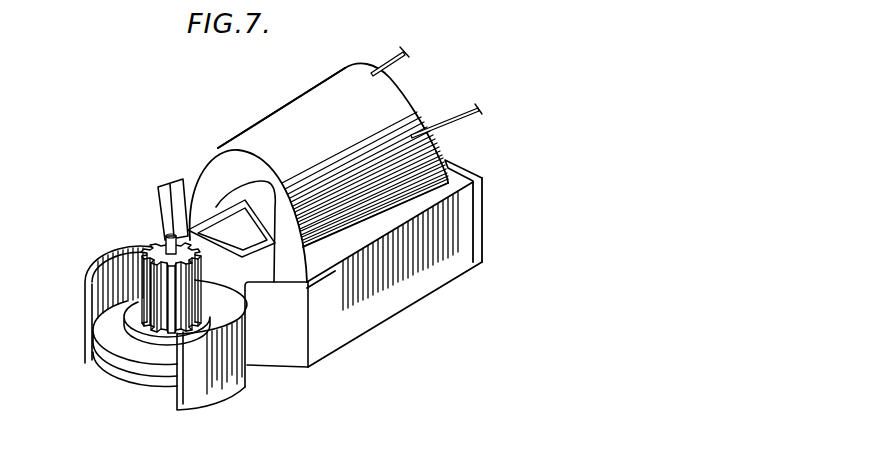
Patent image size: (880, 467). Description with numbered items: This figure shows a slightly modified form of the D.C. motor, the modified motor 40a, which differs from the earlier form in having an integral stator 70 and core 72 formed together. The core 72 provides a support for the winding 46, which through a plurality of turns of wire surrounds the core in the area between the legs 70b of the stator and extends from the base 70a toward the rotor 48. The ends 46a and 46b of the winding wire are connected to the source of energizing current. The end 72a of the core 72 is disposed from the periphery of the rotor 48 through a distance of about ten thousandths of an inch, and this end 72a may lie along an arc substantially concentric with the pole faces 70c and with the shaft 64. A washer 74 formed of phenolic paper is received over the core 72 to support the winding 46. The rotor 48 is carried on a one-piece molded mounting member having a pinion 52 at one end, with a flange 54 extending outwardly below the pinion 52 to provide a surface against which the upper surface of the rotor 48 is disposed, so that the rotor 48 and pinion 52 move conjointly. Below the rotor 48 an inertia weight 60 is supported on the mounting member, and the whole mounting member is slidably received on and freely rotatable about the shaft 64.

The modified motor 40a is at (258, 108).
The winding 46 is at (377, 111).
The wire end 46a is at (398, 52).
The wire end 46b is at (478, 115).
The rotor 48 is at (118, 335).
The pinion 52 is at (143, 262).
The flange 54 is at (147, 338).
The inertia weight 60 is at (158, 380).
The shaft 64 is at (165, 240).
The stator 70 is at (344, 311).
The base 70a is at (478, 168).
The legs 70b is at (452, 265).
The pole faces 70c is at (84, 306).
The core 72 is at (262, 183).
The core end 72a is at (228, 257).
The washer 74 is at (222, 172).